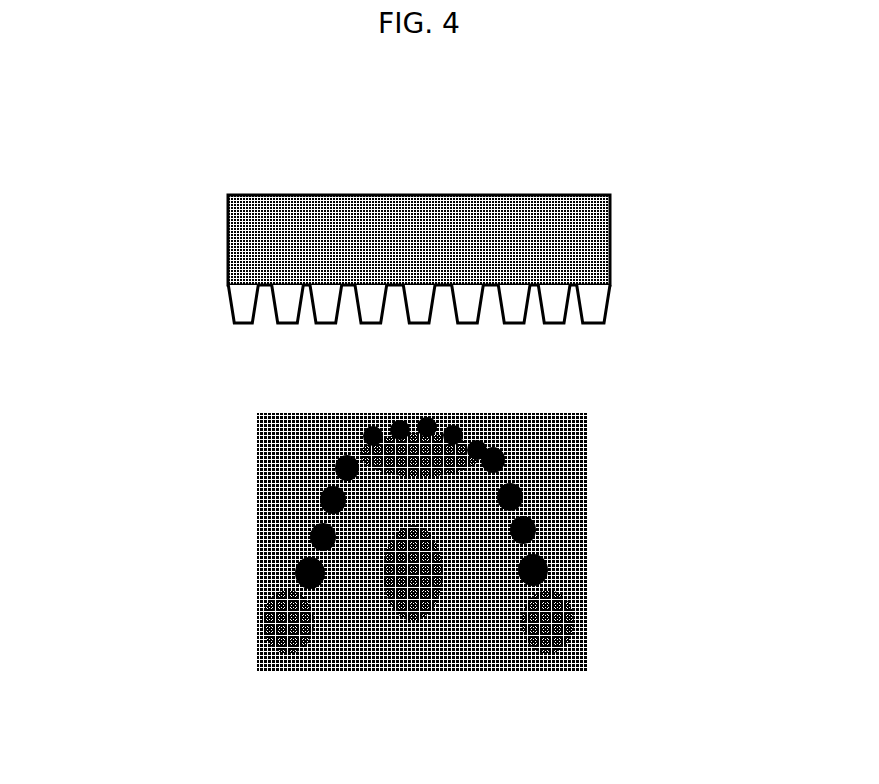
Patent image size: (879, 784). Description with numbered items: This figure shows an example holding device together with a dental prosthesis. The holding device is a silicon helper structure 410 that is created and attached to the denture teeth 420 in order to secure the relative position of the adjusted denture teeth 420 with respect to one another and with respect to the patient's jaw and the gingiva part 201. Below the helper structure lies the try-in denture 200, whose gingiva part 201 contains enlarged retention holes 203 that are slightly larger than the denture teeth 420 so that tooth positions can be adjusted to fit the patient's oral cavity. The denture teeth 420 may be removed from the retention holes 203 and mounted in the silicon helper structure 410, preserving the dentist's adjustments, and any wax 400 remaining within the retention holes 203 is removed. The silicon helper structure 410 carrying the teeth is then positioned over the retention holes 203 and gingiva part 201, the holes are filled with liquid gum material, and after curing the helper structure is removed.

The silicon helper structure 410 is at (292, 242).
The denture teeth 420 is at (233, 317).
The denture 200 is at (543, 470).
The retention holes 203 is at (558, 557).
The wax 400 is at (308, 575).
The gingiva part 201 is at (358, 617).